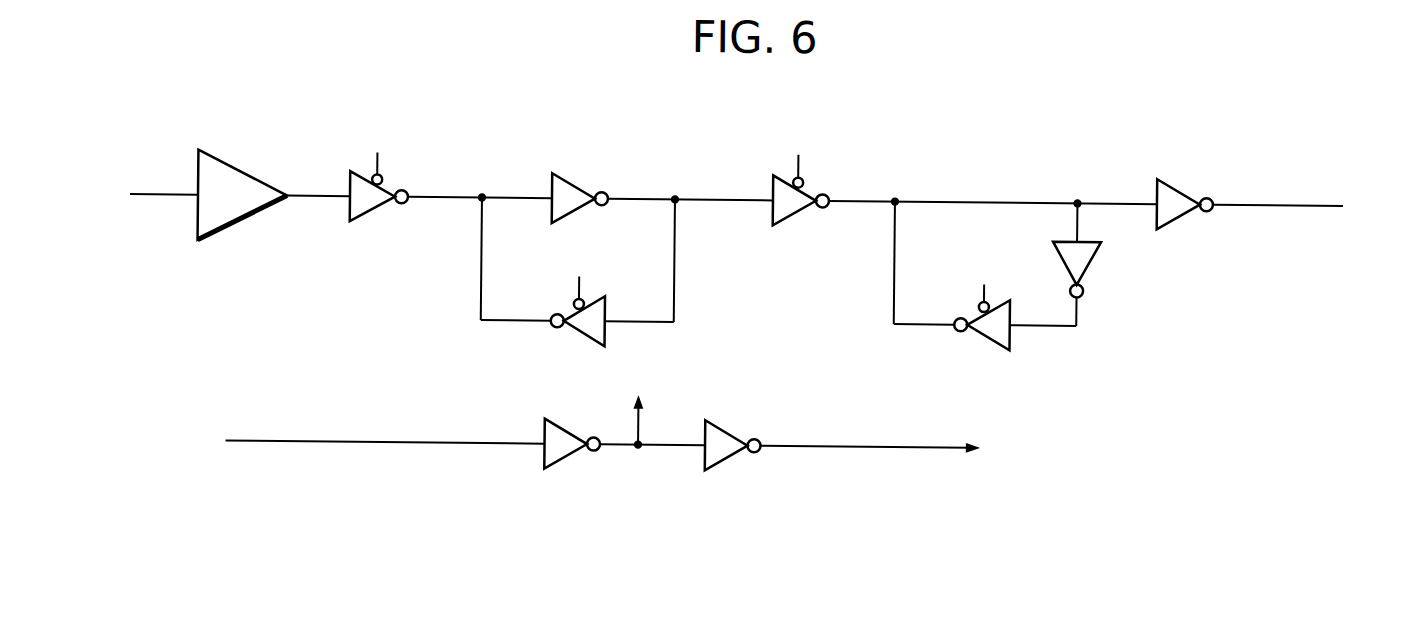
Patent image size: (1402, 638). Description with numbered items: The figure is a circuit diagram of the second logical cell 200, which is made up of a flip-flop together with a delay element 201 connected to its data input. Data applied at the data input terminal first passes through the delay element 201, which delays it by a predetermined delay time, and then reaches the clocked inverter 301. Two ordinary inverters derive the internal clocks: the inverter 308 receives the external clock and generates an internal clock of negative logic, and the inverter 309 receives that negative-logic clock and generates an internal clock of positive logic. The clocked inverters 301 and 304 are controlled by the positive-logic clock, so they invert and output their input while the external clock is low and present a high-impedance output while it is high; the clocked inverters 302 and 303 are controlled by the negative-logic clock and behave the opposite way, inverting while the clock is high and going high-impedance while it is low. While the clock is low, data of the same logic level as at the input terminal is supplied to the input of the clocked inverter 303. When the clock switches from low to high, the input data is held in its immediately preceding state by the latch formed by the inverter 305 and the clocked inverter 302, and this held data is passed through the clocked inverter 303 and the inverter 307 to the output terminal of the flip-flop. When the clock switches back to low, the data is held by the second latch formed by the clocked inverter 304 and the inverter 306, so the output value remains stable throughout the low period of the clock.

The second logical cell 200 is at (277, 106).
The delay element 201 is at (242, 220).
The clocked inverter 301 is at (376, 206).
The clocked inverter 302 is at (585, 333).
The clocked inverter 303 is at (797, 206).
The clocked inverter 304 is at (991, 334).
The inverter 305 is at (580, 184).
The inverter 306 is at (1094, 255).
The inverter 307 is at (1183, 182).
The inverter 308 is at (570, 458).
The inverter 309 is at (731, 458).